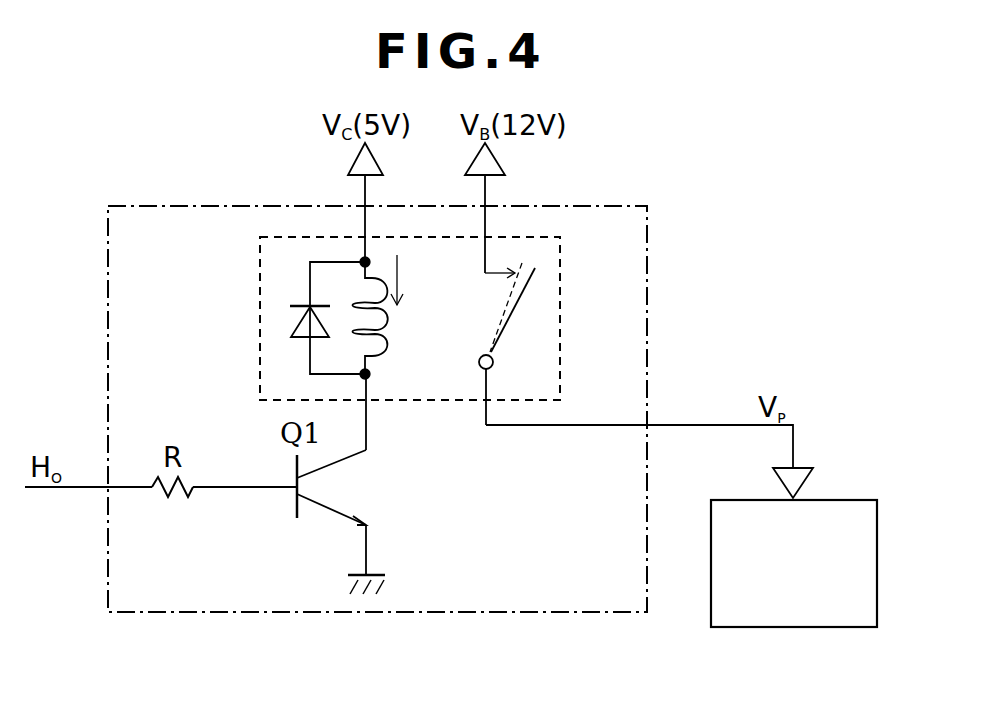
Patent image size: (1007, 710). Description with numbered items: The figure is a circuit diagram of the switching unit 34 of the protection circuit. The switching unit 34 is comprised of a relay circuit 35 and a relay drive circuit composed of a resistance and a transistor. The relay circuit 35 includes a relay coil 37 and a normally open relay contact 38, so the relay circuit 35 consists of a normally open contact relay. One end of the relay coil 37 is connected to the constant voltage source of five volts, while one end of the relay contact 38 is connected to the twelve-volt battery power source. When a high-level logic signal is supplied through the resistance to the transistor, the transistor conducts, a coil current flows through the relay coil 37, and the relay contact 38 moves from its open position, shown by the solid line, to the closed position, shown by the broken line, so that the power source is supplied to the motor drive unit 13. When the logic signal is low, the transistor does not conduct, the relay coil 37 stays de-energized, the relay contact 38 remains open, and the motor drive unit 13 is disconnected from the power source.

The motor drive unit 13 is at (838, 500).
The switching unit 34 is at (562, 205).
The relay circuit 35 is at (248, 342).
The relay coil 37 is at (388, 337).
The relay contact 38 is at (508, 325).